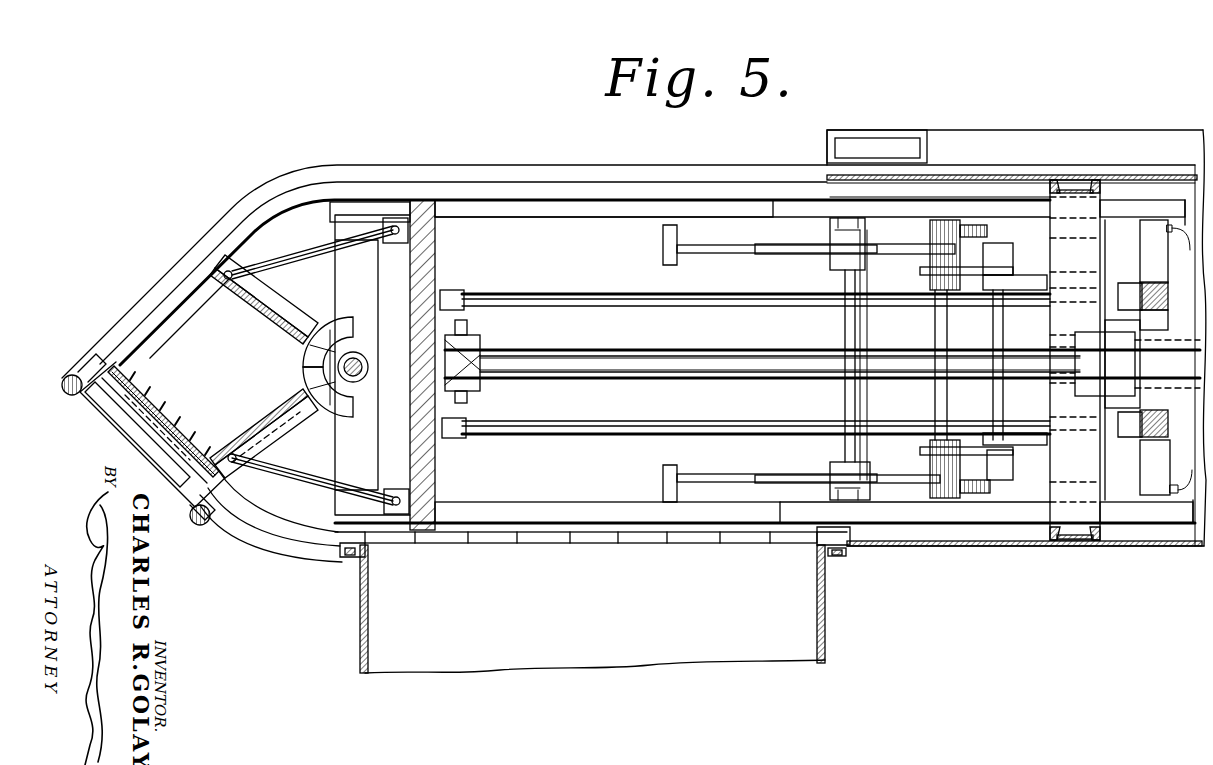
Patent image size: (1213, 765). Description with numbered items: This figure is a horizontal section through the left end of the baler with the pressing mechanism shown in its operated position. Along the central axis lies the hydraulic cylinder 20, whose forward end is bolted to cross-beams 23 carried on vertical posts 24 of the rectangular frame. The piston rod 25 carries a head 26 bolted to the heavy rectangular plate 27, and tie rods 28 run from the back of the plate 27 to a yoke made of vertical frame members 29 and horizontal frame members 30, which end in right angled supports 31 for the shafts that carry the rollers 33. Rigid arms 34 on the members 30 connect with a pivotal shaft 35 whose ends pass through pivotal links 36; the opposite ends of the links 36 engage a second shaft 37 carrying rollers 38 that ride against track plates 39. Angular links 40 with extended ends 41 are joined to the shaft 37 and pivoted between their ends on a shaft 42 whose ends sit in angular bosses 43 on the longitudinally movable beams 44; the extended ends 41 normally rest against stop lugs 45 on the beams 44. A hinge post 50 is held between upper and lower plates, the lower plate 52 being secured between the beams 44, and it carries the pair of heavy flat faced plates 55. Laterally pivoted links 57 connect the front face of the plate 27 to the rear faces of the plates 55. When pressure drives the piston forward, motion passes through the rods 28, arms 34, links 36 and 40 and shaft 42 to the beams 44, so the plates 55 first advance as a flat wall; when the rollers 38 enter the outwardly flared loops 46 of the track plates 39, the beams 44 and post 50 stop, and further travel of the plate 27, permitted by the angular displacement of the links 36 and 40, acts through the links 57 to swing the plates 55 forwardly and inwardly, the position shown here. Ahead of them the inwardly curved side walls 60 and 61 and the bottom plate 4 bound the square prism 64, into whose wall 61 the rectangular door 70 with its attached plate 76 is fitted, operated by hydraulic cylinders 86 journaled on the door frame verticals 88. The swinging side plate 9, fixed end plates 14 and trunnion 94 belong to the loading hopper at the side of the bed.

The bottom plate 4 is at (522, 230).
The swinging side plate 9 is at (512, 657).
The fixed end plates 14 is at (360, 633).
The hydraulic cylinder 20 is at (1165, 382).
The cross-beams 23 is at (1100, 290).
The vertical posts 24 is at (1076, 190).
The piston rod 25 is at (545, 356).
The piston head 26 is at (475, 386).
The rectangular plate 27 is at (436, 270).
The tie rods 28 is at (615, 296).
The vertical frame members 29 is at (1168, 302).
The horizontal frame members 30 is at (1160, 325).
The right angled supports 31 is at (1165, 240).
The rollers 33 is at (1190, 250).
The rigid arms 34 is at (1030, 285).
The pivotal shaft 35 is at (990, 340).
The pivotal links 36 is at (960, 272).
The second shaft 37 is at (934, 325).
The rollers 38 is at (945, 225).
The track plates 39 is at (1000, 230).
The angular links 40 is at (840, 210).
The extended ends 41 is at (707, 253).
The shaft 42 is at (843, 325).
The angular boss 43 is at (835, 225).
The longitudinally movable beams 44 is at (576, 212).
The stop lugs 45 is at (666, 228).
The outwardly flared loop 46 is at (882, 247).
The hinge post 50 is at (368, 365).
The lower plate 52 is at (380, 452).
The flat faced plates 55 is at (210, 268).
The laterally pivoted links 57 is at (290, 260).
The side wall 60 is at (360, 202).
The side wall 61 is at (330, 550).
The square prism 64 is at (167, 340).
The rectangular door 70 is at (125, 415).
The rectangular plate 76 is at (171, 376).
The hydraulic cylinders 86 is at (66, 378).
The door frame verticals 88 is at (68, 396).
The trunnion 94 is at (455, 545).